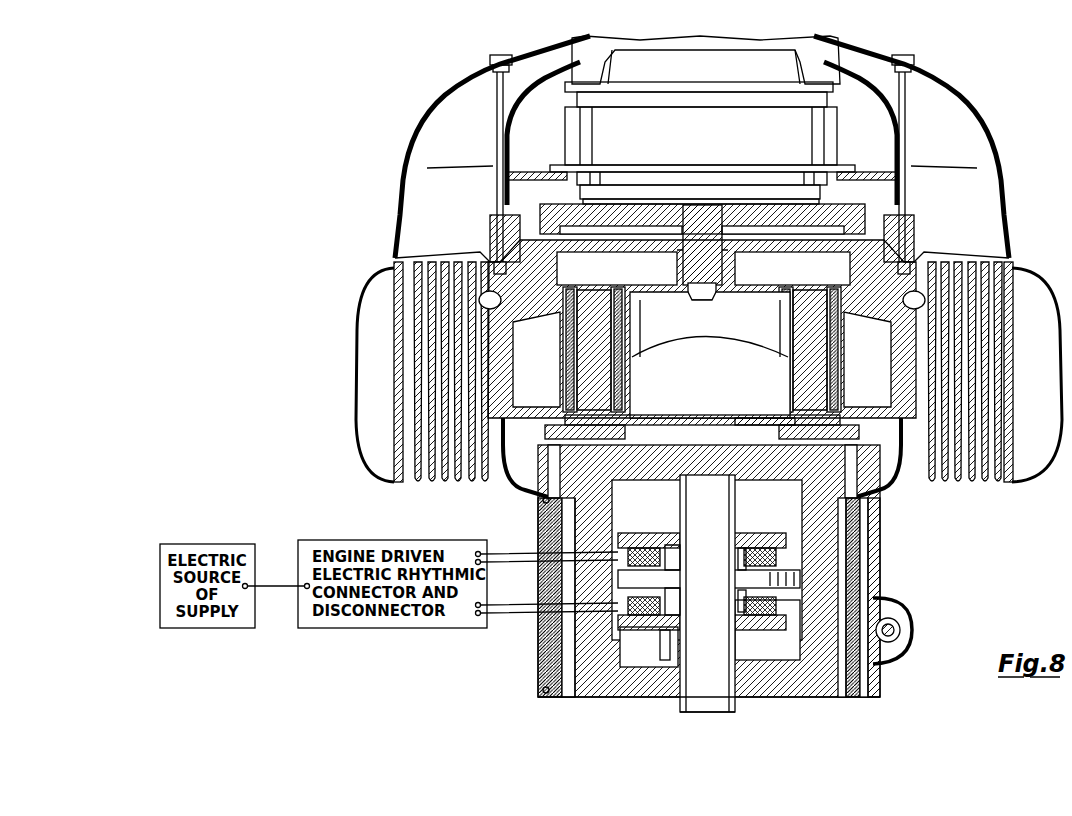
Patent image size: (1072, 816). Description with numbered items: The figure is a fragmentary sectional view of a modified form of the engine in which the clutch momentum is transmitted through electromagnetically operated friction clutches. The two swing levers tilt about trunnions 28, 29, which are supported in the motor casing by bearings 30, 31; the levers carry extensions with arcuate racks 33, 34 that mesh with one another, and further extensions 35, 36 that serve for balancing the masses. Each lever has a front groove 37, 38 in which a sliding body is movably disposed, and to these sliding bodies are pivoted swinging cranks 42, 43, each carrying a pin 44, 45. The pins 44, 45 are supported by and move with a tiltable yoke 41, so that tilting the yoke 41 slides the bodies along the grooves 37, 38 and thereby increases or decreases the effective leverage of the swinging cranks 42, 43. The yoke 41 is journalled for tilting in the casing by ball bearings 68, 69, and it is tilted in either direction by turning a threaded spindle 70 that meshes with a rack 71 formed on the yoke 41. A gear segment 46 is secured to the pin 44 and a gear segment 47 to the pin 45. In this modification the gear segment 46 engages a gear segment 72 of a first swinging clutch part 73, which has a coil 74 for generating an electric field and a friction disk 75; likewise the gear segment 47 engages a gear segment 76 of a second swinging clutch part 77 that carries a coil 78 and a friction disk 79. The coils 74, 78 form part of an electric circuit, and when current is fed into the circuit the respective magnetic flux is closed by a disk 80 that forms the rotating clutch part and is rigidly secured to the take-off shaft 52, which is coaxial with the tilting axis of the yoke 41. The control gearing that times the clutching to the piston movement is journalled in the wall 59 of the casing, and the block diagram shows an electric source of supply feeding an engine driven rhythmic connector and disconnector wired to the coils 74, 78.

The trunnion 28 is at (810, 300).
The trunnion 29 is at (588, 300).
The bearing 30 is at (782, 345).
The bearing 31 is at (643, 345).
The arcuate rack 33 is at (757, 420).
The arcuate rack 34 is at (652, 418).
The extension 35 is at (870, 420).
The extension 36 is at (532, 425).
The front groove 37 is at (845, 437).
The front groove 38 is at (568, 437).
The yoke 41 is at (562, 620).
The swinging crank 42 is at (568, 463).
The swinging crank 43 is at (850, 462).
The pin 44 is at (585, 580).
The pin 45 is at (838, 542).
The gear segment 46 is at (637, 518).
The gear segment 47 is at (860, 610).
The take-off shaft 52 is at (690, 673).
The wall 59 is at (758, 480).
The ball bearing 68 is at (540, 499).
The ball bearing 69 is at (543, 689).
The threaded spindle 70 is at (901, 630).
The rack 71 is at (910, 655).
The gear segment 72 is at (620, 546).
The first swinging clutch part 73 is at (765, 540).
The coil 74 is at (740, 558).
The friction disk 75 is at (680, 558).
The gear segment 76 is at (748, 653).
The second swinging clutch part 77 is at (622, 630).
The coil 78 is at (680, 610).
The friction disk 79 is at (745, 603).
The disk 80 is at (800, 578).